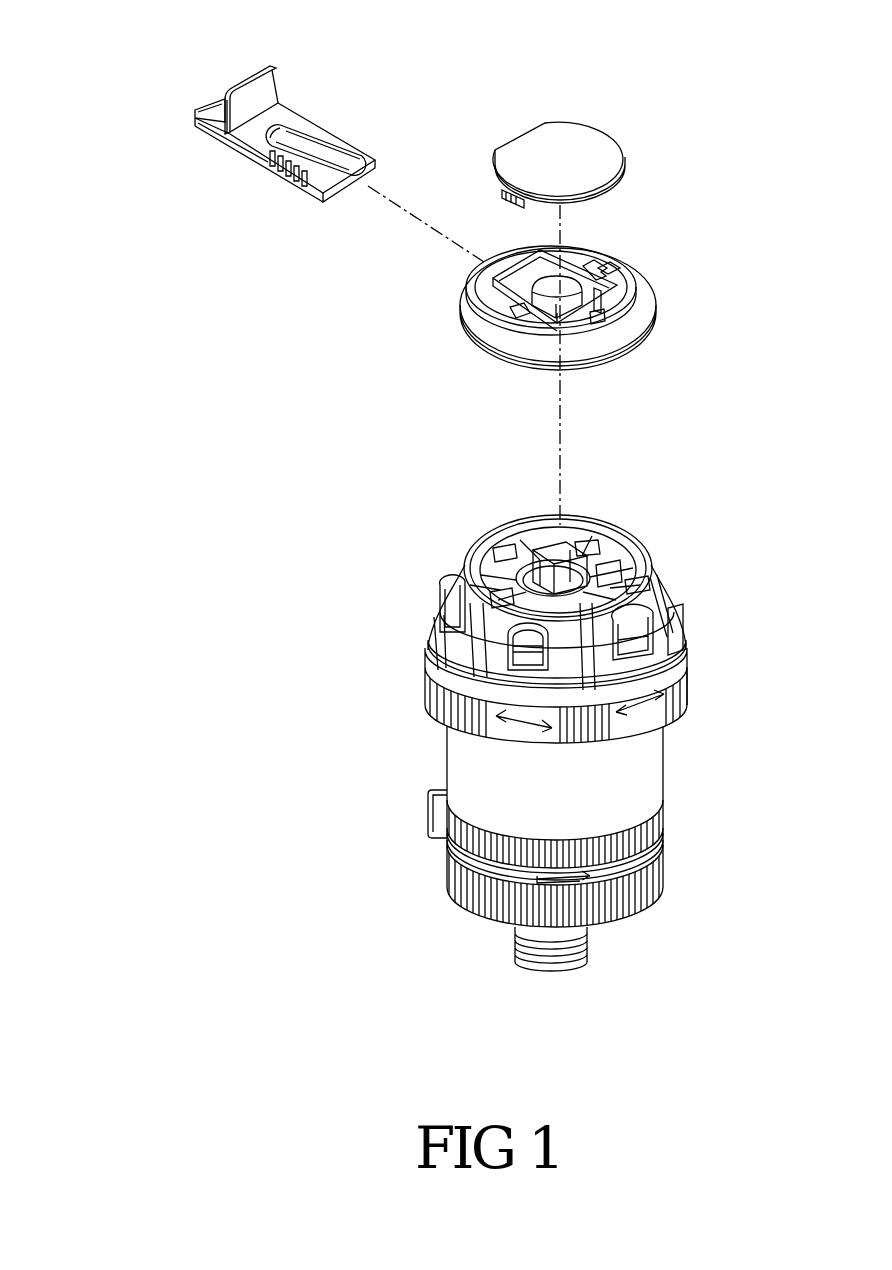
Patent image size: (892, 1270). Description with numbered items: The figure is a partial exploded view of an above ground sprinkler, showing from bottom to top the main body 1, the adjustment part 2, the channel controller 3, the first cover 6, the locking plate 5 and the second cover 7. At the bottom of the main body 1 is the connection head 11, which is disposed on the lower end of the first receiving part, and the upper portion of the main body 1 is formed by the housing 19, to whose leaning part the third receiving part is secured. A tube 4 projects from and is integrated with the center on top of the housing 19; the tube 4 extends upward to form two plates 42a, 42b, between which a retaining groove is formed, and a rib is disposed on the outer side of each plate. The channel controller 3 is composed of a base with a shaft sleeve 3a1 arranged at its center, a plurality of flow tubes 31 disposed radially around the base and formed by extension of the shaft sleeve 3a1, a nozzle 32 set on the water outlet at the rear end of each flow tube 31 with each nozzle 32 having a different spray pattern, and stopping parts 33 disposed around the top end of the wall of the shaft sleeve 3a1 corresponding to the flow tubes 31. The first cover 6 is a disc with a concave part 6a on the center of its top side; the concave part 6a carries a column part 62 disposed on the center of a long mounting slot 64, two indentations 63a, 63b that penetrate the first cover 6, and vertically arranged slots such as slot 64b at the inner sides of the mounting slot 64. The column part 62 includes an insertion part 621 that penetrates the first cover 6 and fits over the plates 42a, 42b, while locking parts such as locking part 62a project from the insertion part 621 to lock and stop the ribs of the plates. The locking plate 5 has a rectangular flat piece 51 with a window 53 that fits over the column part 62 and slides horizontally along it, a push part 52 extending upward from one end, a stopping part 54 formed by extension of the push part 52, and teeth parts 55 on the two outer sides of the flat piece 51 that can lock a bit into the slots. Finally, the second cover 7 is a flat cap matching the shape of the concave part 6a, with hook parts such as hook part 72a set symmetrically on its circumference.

The main body 1 is at (544, 830).
The adjustment part 2 is at (681, 672).
The channel controller 3 is at (574, 569).
The shaft sleeve 3a1 is at (605, 572).
The tube 4 is at (551, 530).
The locking plate 5 is at (262, 113).
The first cover 6 is at (566, 302).
The concave part 6a is at (500, 297).
The second cover 7 is at (523, 138).
The connection head 11 is at (517, 942).
The housing 19 is at (650, 768).
The flow tubes 31 is at (498, 596).
The nozzles 32 is at (446, 592).
The stopping parts 33 is at (637, 584).
The plate 42a is at (500, 542).
The plate 42b is at (572, 540).
The flat piece 51 is at (282, 118).
The push part 52 is at (238, 90).
The window 53 is at (350, 150).
The stopping part 54 is at (200, 110).
The teeth parts 55 is at (266, 161).
The column part 62 is at (535, 282).
The locking part 62a is at (590, 262).
The indentation 63a is at (510, 310).
The indentation 63b is at (610, 266).
The mounting slot 64 is at (604, 316).
The slot 64b is at (610, 306).
The hook part 72a is at (502, 194).
The insertion part 621 is at (540, 274).